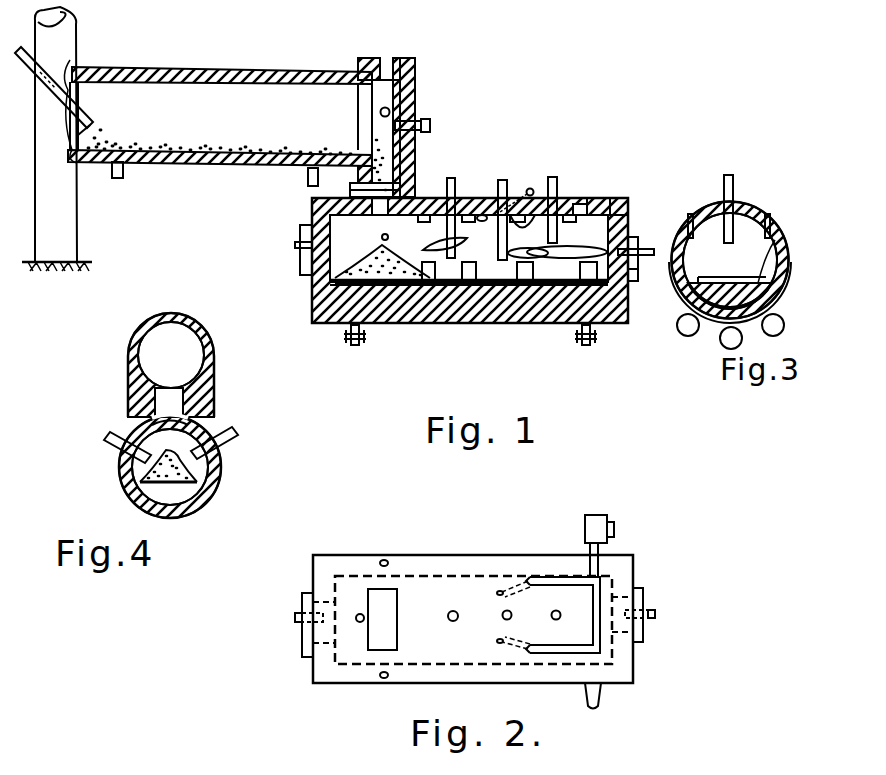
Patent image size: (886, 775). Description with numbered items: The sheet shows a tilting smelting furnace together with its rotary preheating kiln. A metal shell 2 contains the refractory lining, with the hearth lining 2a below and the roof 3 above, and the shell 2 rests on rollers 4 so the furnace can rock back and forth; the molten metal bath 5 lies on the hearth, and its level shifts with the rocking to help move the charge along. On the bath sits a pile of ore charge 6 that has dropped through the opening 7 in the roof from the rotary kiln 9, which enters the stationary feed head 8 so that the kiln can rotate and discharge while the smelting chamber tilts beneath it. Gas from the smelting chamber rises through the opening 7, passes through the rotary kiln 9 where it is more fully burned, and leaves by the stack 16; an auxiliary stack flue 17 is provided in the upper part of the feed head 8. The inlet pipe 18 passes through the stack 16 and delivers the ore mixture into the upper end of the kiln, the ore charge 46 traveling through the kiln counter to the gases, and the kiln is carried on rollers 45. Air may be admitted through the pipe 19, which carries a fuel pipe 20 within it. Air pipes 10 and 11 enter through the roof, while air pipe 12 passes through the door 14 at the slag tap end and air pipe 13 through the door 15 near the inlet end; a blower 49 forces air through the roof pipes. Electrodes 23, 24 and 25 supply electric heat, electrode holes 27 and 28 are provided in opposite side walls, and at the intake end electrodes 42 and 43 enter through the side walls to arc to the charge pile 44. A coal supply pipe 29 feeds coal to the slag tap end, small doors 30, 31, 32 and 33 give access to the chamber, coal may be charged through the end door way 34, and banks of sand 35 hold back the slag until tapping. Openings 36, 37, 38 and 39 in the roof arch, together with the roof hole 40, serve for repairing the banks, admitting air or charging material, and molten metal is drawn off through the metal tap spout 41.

In FIG. 1, the metal shell 2 is at (545, 334).
In FIG. 1, the hearth lining 2a is at (482, 285).
In FIG. 1, the roof 3 is at (482, 212).
In FIG. 1, the rollers 4 is at (359, 342).
In FIG. 1, the metal bath 5 is at (468, 280).
In FIG. 3, the metal bath 5 is at (775, 238).
In FIG. 1, the pile of ore charge 6 is at (430, 280).
In FIG. 1, the opening 7 is at (376, 215).
In FIG. 1, the feed head 8 is at (415, 80).
In FIG. 4, the feed head 8 is at (213, 345).
In FIG. 1, the rotary kiln 9 is at (302, 172).
In FIG. 1, the air pipe 10 is at (540, 205).
In FIG. 2, the air pipe 10 is at (510, 583).
In FIG. 2, the air pipe 11 is at (512, 645).
In FIG. 1, the air pipe 12 is at (645, 249).
In FIG. 2, the air pipe 12 is at (655, 613).
In FIG. 1, the air pipe 13 is at (295, 245).
In FIG. 2, the air pipe 13 is at (296, 623).
In FIG. 1, the door 14 is at (638, 268).
In FIG. 2, the door 14 is at (643, 632).
In FIG. 1, the door 15 is at (300, 258).
In FIG. 2, the door 15 is at (300, 650).
In FIG. 1, the stack 16 is at (77, 40).
In FIG. 1, the auxiliary stack flue 17 is at (390, 110).
In FIG. 1, the inlet pipe for charge 18 is at (30, 70).
In FIG. 1, the air pipe 19 is at (422, 125).
In FIG. 1, the fuel pipe 20 is at (430, 130).
In FIG. 1, the electrode 23 is at (468, 212).
In FIG. 2, the electrode 23 is at (453, 611).
In FIG. 1, the electrode 24 is at (525, 210).
In FIG. 2, the electrode 24 is at (504, 618).
In FIG. 1, the electrode 25 is at (580, 210).
In FIG. 2, the electrode 25 is at (559, 612).
In FIG. 1, the electrode hole 27 is at (388, 237).
In FIG. 2, the electrode hole 27 is at (384, 559).
In FIG. 2, the electrode hole 28 is at (384, 680).
In FIG. 1, the coal supply pipe 29 is at (602, 210).
In FIG. 1, the small door 30 is at (440, 285).
In FIG. 1, the small door 31 is at (522, 285).
In FIG. 1, the small door 32 is at (560, 262).
In FIG. 1, the small door 33 is at (586, 285).
In FIG. 1, the end door way 34 is at (640, 240).
In FIG. 1, the banks of sand 35 is at (640, 275).
In FIG. 1, the opening 36 is at (430, 215).
In FIG. 1, the opening 37 is at (497, 215).
In FIG. 1, the opening 38 is at (533, 208).
In FIG. 1, the opening 39 is at (592, 208).
In FIG. 3, the opening 39 is at (770, 205).
In FIG. 3, the hole through the roof 40 is at (690, 212).
In FIG. 2, the metal tap spout 41 is at (600, 702).
In FIG. 4, the electrode 42 is at (238, 440).
In FIG. 4, the electrode 43 is at (104, 441).
In FIG. 4, the charge pile 44 is at (188, 454).
In FIG. 1, the rollers 45 is at (123, 170).
In FIG. 1, the ore charge 46 is at (205, 147).
In FIG. 2, the blower 49 is at (600, 522).